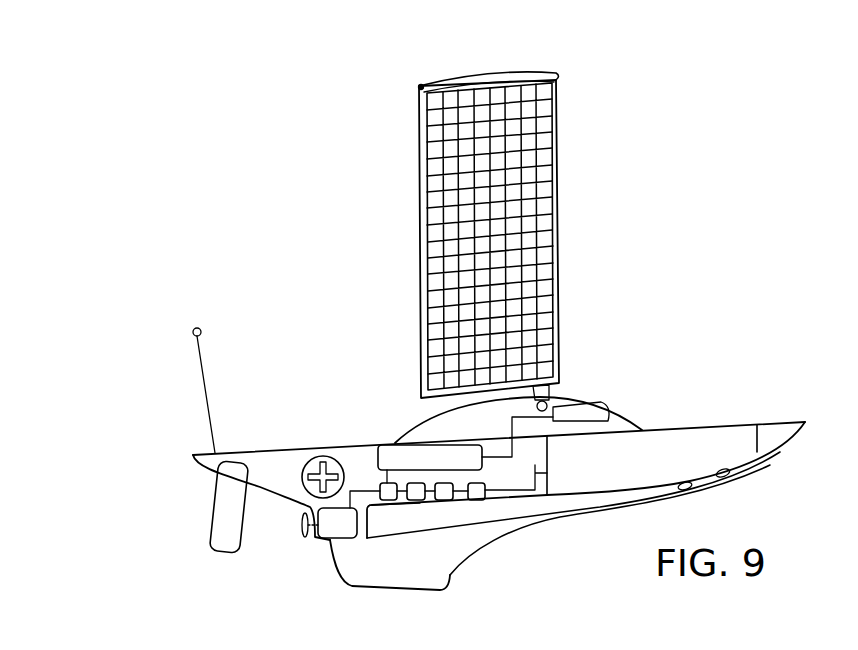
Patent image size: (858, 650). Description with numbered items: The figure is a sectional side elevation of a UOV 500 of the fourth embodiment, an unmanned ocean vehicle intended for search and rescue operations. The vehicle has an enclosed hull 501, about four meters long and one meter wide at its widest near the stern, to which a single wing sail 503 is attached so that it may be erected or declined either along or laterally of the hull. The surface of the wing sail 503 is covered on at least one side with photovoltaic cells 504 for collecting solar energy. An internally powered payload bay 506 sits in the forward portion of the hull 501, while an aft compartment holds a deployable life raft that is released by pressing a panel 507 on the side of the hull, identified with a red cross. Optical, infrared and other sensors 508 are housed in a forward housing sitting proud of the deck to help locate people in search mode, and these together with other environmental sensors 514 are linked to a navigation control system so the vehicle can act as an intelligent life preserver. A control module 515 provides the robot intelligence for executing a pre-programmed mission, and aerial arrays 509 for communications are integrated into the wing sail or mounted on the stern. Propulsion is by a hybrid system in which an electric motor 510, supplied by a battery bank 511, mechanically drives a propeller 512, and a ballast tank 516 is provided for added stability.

The UOV 500 is at (319, 82).
The enclosed hull 501 is at (778, 430).
The wing sail 503 is at (563, 105).
The photovoltaic cells 504 is at (433, 237).
The payload bay 506 is at (648, 465).
The panel 507 is at (313, 463).
The sensors 508 is at (588, 418).
The aerial arrays 509 is at (196, 350).
The electric motor 510 is at (332, 523).
The battery bank 511 is at (486, 494).
The propeller 512 is at (306, 538).
The environmental sensors 514 is at (690, 490).
The control module 515 is at (456, 470).
The ballast tank 516 is at (437, 534).